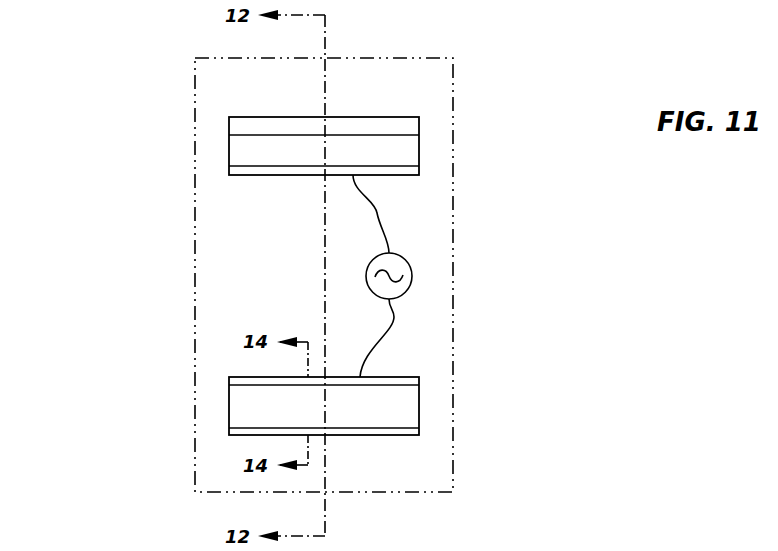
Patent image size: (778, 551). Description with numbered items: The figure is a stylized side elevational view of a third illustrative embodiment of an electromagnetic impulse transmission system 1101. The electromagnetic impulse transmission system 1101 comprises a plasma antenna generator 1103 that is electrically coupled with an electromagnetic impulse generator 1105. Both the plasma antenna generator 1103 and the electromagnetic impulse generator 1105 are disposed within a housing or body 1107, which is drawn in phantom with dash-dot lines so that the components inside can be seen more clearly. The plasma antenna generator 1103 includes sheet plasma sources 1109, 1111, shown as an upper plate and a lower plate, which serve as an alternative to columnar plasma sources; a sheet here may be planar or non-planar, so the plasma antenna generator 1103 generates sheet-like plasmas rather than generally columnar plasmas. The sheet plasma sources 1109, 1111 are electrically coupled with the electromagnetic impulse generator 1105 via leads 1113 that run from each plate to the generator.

The electromagnetic impulse transmission system 1101 is at (488, 118).
The plasma antenna generator 1103 is at (222, 150).
The electromagnetic impulse generator 1105 is at (410, 265).
The housing or body 1107 is at (453, 470).
The sheet plasma source 1109 is at (405, 148).
The sheet plasma source 1111 is at (403, 413).
The leads 1113 is at (377, 213).